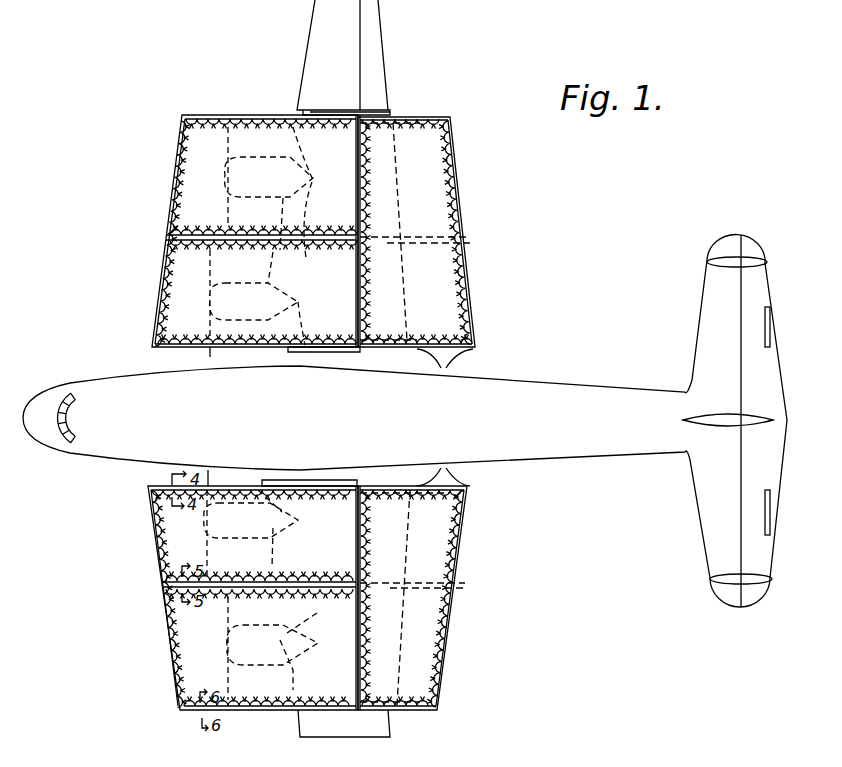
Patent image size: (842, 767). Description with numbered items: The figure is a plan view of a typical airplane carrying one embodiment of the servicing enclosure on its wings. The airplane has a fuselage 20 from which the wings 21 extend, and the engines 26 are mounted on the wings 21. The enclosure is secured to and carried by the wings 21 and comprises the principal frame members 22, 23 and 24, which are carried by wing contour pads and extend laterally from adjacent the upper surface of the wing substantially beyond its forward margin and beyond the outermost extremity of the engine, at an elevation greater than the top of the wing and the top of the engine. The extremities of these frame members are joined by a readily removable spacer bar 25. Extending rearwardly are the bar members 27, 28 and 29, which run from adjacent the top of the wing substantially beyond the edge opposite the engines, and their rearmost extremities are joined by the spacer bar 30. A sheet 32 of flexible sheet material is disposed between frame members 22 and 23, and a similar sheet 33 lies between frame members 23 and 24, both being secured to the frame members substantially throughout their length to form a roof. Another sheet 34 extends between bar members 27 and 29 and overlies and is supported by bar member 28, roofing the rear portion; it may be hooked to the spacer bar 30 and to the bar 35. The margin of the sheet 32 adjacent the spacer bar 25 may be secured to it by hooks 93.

The fuselage 20 is at (533, 378).
The wings 21 is at (382, 12).
The principal frame member 22 is at (250, 711).
The principal frame member 23 is at (168, 602).
The principal frame member 24 is at (160, 487).
The spacer bar 25 is at (170, 655).
The engines 26 is at (285, 288).
The bar member 27 is at (410, 117).
The bar member 28 is at (432, 234).
The bar member 29 is at (450, 357).
The spacer bar 30 is at (454, 174).
The sheet 32 is at (178, 682).
The sheet 33 is at (170, 521).
The sheet 34 is at (430, 192).
The bar 35 is at (360, 284).
The hooks 93 is at (166, 567).